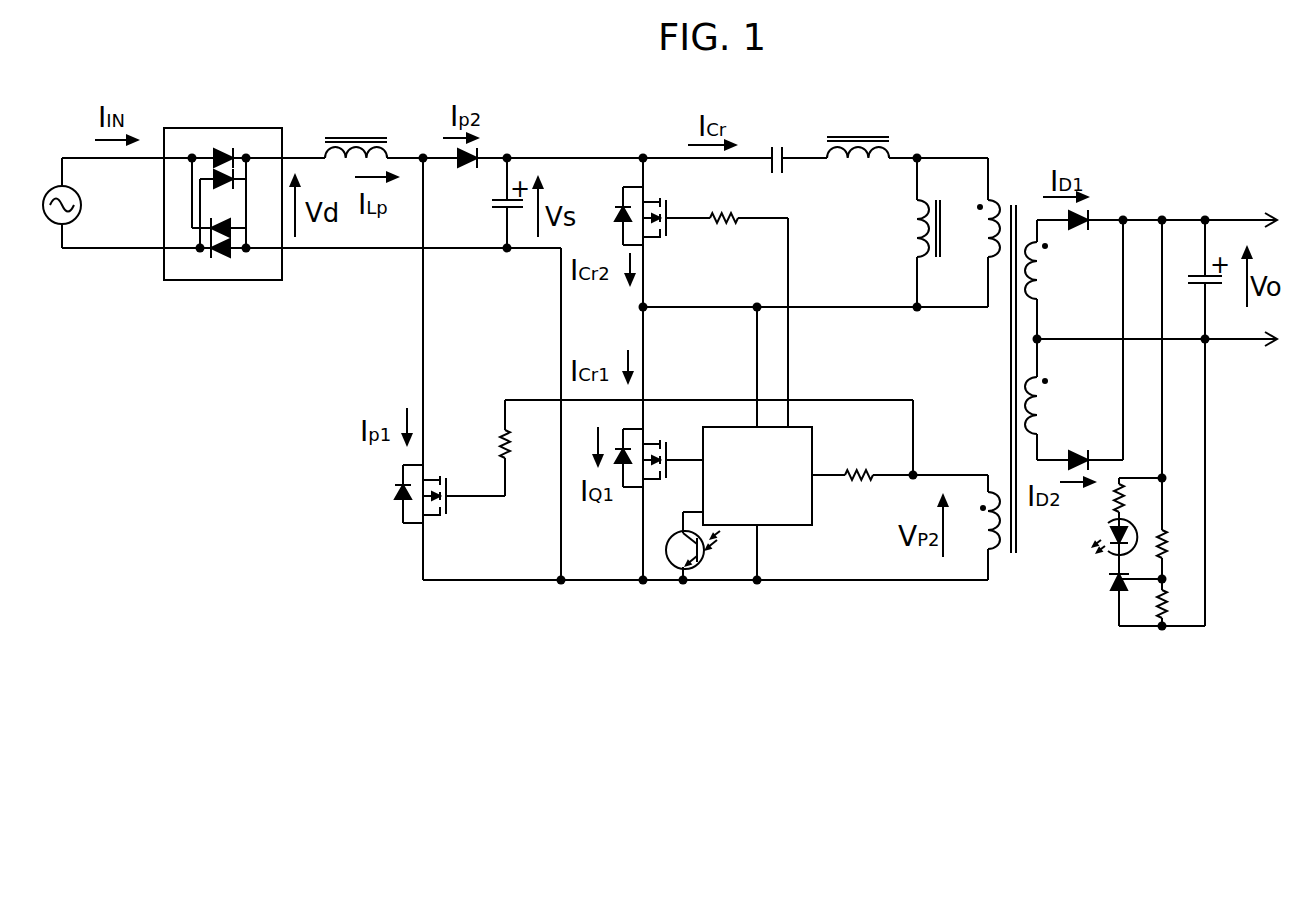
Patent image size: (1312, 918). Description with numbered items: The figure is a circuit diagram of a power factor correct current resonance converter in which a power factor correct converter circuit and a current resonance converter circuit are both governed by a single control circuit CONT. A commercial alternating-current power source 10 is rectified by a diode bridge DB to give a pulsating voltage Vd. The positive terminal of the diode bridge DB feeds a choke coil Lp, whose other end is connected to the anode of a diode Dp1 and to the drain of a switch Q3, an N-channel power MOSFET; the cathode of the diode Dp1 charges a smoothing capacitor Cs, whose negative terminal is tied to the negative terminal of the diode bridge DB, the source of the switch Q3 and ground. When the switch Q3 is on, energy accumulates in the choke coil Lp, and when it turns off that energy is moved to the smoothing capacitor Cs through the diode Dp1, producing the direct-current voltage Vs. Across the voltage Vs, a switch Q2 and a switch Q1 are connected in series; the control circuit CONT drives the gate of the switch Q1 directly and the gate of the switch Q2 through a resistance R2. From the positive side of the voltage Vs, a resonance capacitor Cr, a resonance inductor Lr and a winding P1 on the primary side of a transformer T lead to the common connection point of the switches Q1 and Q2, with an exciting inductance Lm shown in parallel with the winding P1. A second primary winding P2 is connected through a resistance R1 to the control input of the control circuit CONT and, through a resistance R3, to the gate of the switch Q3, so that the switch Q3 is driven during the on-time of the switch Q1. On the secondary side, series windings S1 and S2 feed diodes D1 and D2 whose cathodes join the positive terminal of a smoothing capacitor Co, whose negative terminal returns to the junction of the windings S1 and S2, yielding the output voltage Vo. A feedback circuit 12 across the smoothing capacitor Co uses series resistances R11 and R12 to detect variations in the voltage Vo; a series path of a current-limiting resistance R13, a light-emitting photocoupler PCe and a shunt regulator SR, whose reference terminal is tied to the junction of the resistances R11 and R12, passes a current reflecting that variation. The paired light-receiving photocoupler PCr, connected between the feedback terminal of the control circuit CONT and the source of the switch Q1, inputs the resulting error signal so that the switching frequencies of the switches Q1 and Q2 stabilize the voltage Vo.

The commercial alternating-current power source 10 is at (55, 188).
The feedback circuit 12 is at (1167, 425).
The diode bridge DB is at (223, 189).
The choke coil Lp is at (352, 128).
The diode Dp1 is at (465, 177).
The smoothing capacitor Cs is at (492, 205).
The switch Q2 is at (653, 232).
The resistance R2 is at (727, 304).
The resonance capacitor Cr is at (794, 145).
The resonance inductor Lr is at (907, 135).
The exciting inductance Lm is at (911, 232).
The winding P1 is at (978, 232).
The transformer T is at (1012, 362).
The winding S1 is at (1051, 279).
The diode D1 is at (1157, 238).
The smoothing capacitor Co is at (1196, 279).
The winding S2 is at (1052, 399).
The diode D2 is at (1080, 345).
The resistance R13 is at (1132, 498).
The photocoupler on light-emitting side PCe is at (1092, 537).
The shunt regulator SR is at (1114, 587).
The resistance R11 is at (1170, 544).
The resistance R12 is at (1170, 604).
The switch Q3 is at (431, 369).
The resistance R3 is at (679, 448).
The switch Q1 is at (651, 443).
The control circuit CONT is at (739, 443).
The resistance R1 is at (865, 461).
The second winding P2 is at (956, 527).
The photocoupler on light-receiving side PCr is at (693, 569).